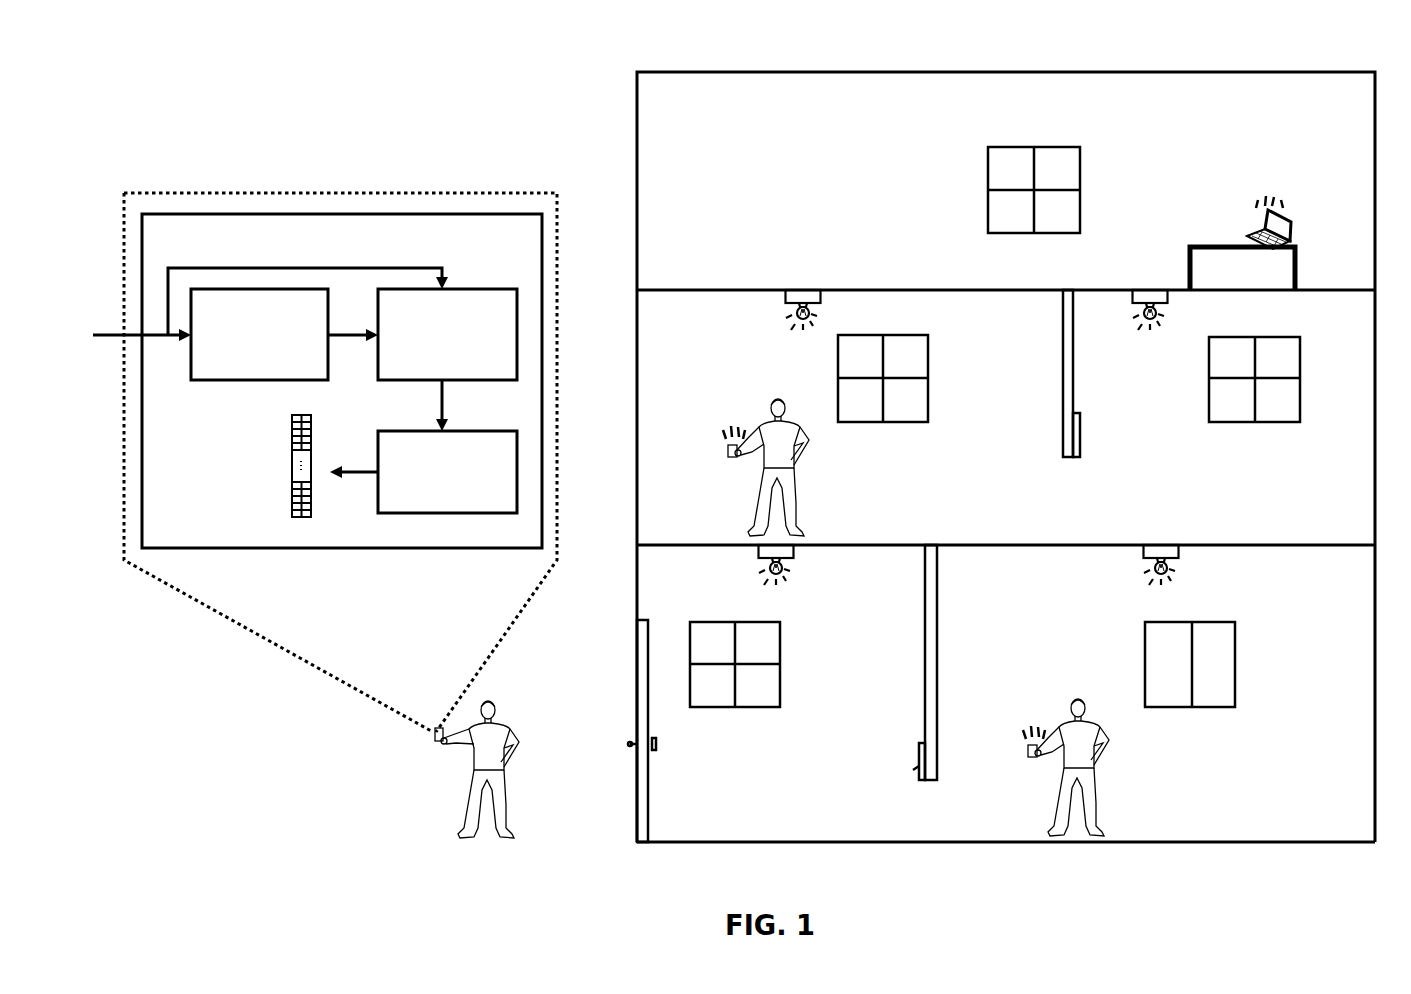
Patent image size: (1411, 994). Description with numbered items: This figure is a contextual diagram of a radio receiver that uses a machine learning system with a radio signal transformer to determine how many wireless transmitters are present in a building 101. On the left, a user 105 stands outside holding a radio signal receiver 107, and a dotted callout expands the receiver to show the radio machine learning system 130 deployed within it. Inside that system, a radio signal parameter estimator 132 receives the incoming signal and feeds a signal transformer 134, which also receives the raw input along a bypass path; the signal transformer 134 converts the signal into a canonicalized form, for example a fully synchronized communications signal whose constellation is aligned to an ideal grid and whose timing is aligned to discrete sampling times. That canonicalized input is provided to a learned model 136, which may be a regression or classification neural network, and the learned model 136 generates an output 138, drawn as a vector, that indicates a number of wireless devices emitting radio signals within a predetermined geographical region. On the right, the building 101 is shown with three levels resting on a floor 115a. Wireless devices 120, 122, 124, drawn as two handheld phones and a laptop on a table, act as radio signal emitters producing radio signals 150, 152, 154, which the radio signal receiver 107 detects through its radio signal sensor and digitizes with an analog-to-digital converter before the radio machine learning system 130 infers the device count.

The building 101 is at (1313, 72).
The user 105 is at (502, 800).
The radio signal receiver 107 is at (437, 742).
The floor 115a is at (1006, 854).
The wireless device 120 is at (1034, 760).
The wireless device 122 is at (734, 460).
The wireless device 124 is at (1292, 222).
The radio machine learning system 130 is at (490, 537).
The radio signal parameter estimator 132 is at (196, 378).
The signal transformer 134 is at (418, 372).
The learned model 136 is at (407, 506).
The output 138 is at (291, 428).
The radio signal 150 is at (1033, 724).
The radio signal 152 is at (733, 424).
The radio signal 154 is at (1272, 195).